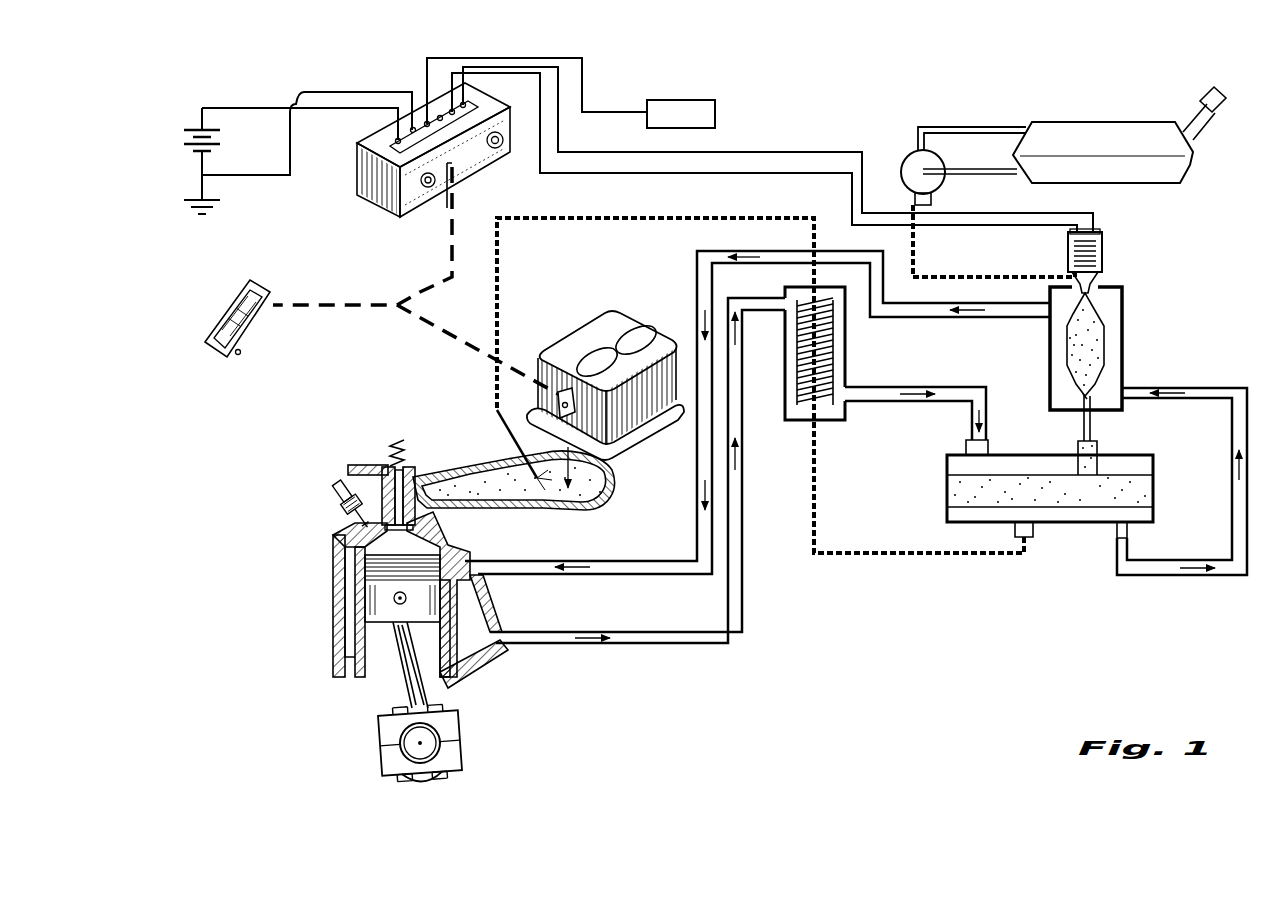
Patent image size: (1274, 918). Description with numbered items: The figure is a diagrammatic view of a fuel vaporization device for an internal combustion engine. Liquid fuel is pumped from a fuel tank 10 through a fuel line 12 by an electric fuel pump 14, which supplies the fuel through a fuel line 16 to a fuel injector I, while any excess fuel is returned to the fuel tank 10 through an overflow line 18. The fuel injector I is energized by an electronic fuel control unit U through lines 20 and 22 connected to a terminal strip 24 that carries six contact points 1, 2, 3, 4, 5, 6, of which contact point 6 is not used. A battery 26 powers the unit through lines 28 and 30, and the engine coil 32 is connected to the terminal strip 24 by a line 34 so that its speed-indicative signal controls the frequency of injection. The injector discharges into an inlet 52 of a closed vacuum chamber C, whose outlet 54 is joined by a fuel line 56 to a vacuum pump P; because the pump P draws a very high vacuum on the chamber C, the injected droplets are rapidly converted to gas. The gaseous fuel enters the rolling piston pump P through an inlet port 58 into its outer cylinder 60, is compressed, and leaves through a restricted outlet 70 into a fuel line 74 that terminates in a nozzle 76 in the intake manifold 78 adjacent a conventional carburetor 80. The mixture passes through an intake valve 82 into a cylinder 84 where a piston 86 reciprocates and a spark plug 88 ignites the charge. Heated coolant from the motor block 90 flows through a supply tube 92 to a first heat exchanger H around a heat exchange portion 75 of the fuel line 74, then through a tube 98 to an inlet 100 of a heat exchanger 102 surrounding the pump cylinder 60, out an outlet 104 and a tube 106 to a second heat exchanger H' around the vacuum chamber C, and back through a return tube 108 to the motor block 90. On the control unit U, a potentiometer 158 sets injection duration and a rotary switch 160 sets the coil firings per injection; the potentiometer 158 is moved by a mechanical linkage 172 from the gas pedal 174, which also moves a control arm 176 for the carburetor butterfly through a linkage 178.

The contact point 1 is at (398, 151).
The contact point 2 is at (430, 190).
The contact point 3 is at (432, 130).
The contact point 4 is at (445, 119).
The contact point 5 is at (456, 114).
The contact point 6 is at (467, 97).
The fuel tank 10 is at (1075, 140).
The fuel line 12 is at (985, 173).
The fuel pump 14 is at (905, 162).
The fuel line 16 is at (955, 277).
The overflow line 18 is at (975, 127).
The line 20 is at (735, 152).
The line 22 is at (712, 173).
The terminal strip 24 is at (416, 124).
The battery 26 is at (185, 130).
The line 28 is at (246, 108).
The line 30 is at (328, 92).
The coil 32 is at (712, 118).
The line 34 is at (582, 80).
The inlet 52 is at (1100, 293).
The outlet 54 is at (1100, 396).
The fuel line 56 is at (1092, 422).
The inlet port 58 is at (1074, 452).
The outer cylinder 60 is at (1110, 470).
The outlet 70 is at (1030, 540).
The fuel line 74 is at (605, 220).
The heat exchange portion 75 is at (812, 370).
The nozzle 76 is at (490, 483).
The intake manifold 78 is at (600, 490).
The carburetor 80 is at (596, 326).
The intake valve 82 is at (433, 478).
The cylinder 84 is at (333, 548).
The piston 86 is at (380, 602).
The spark plug 88 is at (355, 500).
The motor block 90 is at (478, 662).
The supply tube 92 is at (635, 632).
The tube 98 is at (945, 390).
The inlet 100 is at (965, 451).
The heat exchanger 102 is at (947, 482).
The outlet 104 is at (1132, 530).
The tube 106 is at (1218, 392).
The return tube 108 is at (655, 557).
The potentiometer 158 is at (452, 228).
The rotary switch 160 is at (505, 141).
The mechanical linkage 172 is at (450, 277).
The gas pedal 174 is at (238, 305).
The control arm 176 is at (578, 402).
The linkage 178 is at (450, 337).
The electronic fuel control unit U is at (346, 204).
The fuel injector I is at (1115, 245).
The vacuum chamber C is at (1108, 315).
The first heat exchanger H is at (841, 369).
The second heat exchanger H' is at (1149, 348).
The vacuum pump P is at (1158, 486).